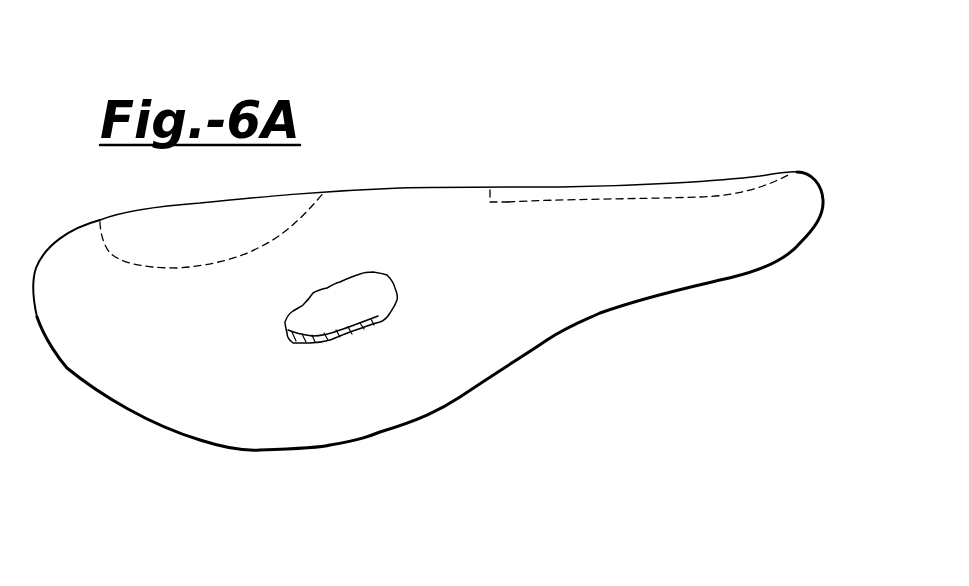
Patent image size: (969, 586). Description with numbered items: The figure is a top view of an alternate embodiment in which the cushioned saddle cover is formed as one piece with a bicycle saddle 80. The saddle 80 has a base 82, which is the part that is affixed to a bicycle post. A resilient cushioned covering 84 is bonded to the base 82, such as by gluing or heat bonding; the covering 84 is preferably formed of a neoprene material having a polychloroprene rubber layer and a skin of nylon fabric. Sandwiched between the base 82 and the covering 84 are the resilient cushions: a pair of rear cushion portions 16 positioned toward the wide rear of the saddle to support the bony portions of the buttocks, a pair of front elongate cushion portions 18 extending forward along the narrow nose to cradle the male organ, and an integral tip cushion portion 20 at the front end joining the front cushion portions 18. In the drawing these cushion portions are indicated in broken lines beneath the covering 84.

The saddle 80 is at (565, 168).
The rear cushion portions 16 is at (303, 215).
The front cushion portions 18 is at (508, 202).
The tip cushion portion 20 is at (758, 177).
The base 82 is at (368, 290).
The cushioned covering 84 is at (442, 373).